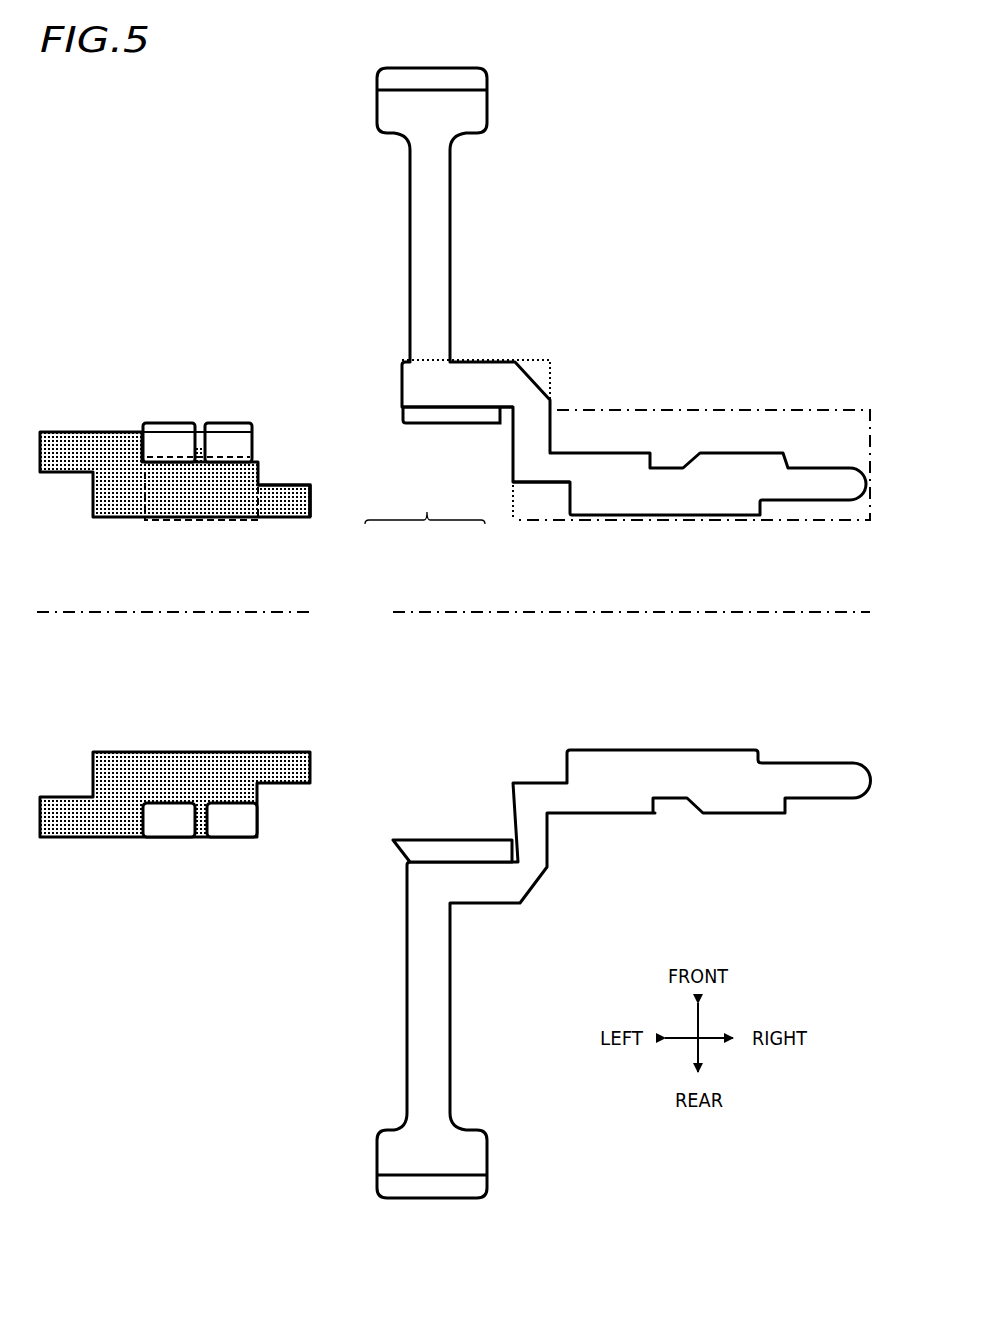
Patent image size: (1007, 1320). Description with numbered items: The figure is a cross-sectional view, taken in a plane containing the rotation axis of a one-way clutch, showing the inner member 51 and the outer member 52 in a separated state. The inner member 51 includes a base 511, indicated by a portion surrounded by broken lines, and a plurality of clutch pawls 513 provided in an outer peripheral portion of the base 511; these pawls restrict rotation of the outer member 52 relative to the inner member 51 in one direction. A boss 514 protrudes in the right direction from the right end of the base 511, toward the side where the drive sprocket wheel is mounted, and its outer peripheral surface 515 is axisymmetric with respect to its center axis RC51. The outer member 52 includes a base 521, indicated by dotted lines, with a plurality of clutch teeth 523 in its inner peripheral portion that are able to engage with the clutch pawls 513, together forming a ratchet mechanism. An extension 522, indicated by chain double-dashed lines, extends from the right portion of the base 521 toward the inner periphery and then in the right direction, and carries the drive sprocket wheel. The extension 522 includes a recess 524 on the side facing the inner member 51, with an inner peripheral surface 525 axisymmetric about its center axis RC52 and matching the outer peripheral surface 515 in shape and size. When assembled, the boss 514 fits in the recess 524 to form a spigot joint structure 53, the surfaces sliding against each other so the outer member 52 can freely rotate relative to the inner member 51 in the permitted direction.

The inner member 51 is at (108, 425).
The base 511 is at (197, 521).
The clutch pawls 513 is at (227, 425).
The boss 514 is at (306, 518).
The outer peripheral surface 515 is at (293, 483).
The outer member 52 is at (592, 376).
The base 521 is at (477, 360).
The extension 522 is at (655, 410).
The clutch teeth 523 is at (480, 418).
The recess 524 is at (530, 498).
The inner peripheral surface 525 is at (547, 483).
The spigot joint structure 53 is at (425, 504).
The center axis RC51 is at (140, 613).
The center axis RC52 is at (497, 613).